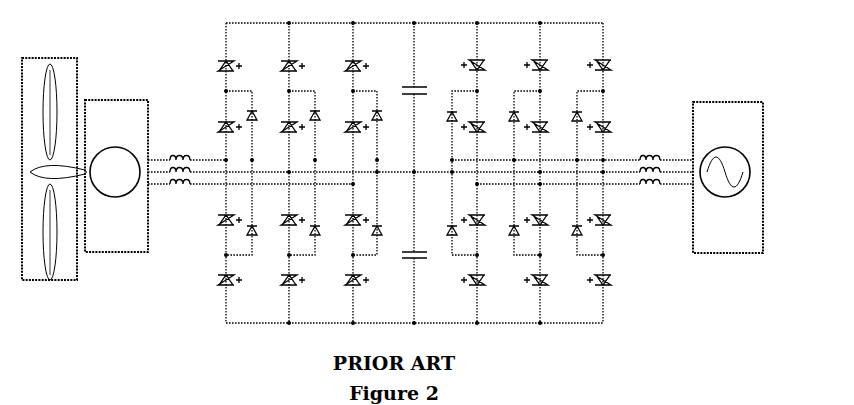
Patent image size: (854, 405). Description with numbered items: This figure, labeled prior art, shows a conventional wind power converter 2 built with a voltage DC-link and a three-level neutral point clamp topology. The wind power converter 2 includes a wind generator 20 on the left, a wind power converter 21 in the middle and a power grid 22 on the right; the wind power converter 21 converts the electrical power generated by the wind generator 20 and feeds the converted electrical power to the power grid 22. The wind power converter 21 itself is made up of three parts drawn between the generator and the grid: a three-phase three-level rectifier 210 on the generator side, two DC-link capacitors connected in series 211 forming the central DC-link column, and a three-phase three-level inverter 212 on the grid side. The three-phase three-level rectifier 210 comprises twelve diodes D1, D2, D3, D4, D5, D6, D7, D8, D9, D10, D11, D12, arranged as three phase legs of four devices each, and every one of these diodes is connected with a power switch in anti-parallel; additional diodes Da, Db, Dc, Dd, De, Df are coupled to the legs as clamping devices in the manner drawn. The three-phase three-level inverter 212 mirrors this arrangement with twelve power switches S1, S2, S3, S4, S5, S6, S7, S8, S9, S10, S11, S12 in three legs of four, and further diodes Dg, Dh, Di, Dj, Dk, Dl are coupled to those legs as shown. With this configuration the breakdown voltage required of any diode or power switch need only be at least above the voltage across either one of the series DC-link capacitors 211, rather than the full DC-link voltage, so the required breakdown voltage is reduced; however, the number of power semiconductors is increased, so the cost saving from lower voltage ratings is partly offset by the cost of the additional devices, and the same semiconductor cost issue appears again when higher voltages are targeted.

The wind power converter 2 is at (373, 190).
The wind generator 20 is at (116, 176).
The wind power converter 21 is at (410, 182).
The three-phase three-level rectifier 210 is at (295, 173).
The two DC-link capacitors connected in series 211 is at (414, 173).
The three-phase three-level inverter 212 is at (529, 173).
The power grid 22 is at (728, 177).
The diode D1 is at (219, 66).
The diode D2 is at (219, 127).
The diode D3 is at (219, 220).
The diode D4 is at (219, 280).
The diode D5 is at (281, 66).
The diode D6 is at (285, 136).
The diode D7 is at (284, 211).
The diode D8 is at (281, 280).
The diode D9 is at (345, 66).
The diode D10 is at (347, 136).
The diode D11 is at (346, 211).
The diode D12 is at (343, 280).
The additional diode Da is at (258, 111).
The additional diode Db is at (258, 237).
The additional diode Dc is at (321, 111).
The additional diode Dd is at (321, 237).
The additional diode De is at (383, 111).
The additional diode Df is at (383, 237).
The diode Dg is at (445, 125).
The diode Dh is at (445, 239).
The diode Di is at (509, 125).
The diode Dj is at (509, 239).
The diode Dk is at (571, 125).
The diode Dl is at (572, 239).
The power switch S1 is at (479, 55).
The power switch S2 is at (479, 117).
The power switch S3 is at (479, 210).
The power switch S4 is at (479, 273).
The power switch S5 is at (541, 55).
The power switch S6 is at (541, 117).
The power switch S7 is at (541, 210).
The power switch S8 is at (541, 273).
The power switch S9 is at (604, 55).
The power switch S10 is at (605, 117).
The power switch S11 is at (605, 210).
The power switch S12 is at (605, 273).